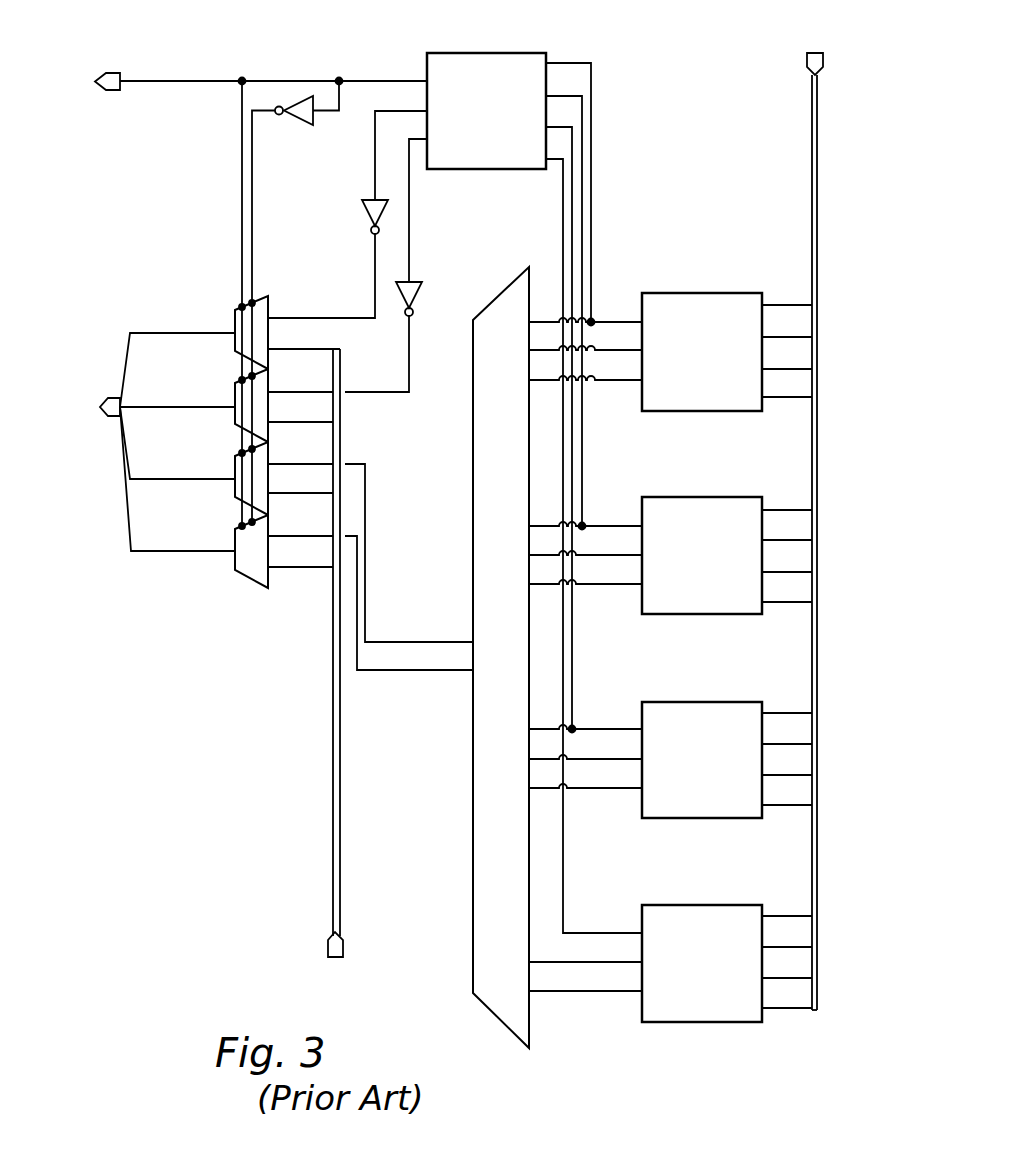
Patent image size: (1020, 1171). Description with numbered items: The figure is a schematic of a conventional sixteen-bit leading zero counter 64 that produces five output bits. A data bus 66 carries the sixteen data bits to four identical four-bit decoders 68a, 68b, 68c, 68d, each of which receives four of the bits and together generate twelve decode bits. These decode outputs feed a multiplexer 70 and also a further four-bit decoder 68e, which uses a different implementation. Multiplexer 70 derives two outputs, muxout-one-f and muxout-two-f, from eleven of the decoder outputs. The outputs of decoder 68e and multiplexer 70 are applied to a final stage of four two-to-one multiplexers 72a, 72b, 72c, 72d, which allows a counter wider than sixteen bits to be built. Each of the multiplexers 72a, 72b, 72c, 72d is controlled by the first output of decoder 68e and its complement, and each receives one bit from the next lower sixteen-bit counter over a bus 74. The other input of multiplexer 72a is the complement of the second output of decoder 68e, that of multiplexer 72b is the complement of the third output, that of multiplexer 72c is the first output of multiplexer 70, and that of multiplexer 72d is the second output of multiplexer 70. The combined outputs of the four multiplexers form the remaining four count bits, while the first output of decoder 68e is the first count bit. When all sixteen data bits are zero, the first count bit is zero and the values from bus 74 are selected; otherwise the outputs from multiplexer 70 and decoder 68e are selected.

The 16-bit counter 64 is at (234, 889).
The data bus 66 is at (812, 197).
The 4-bit decoder 68a is at (710, 293).
The 4-bit decoder 68b is at (710, 497).
The 4-bit decoder 68c is at (710, 702).
The 4-bit decoder 68d is at (710, 905).
The 4-bit decoder 68e is at (494, 53).
The multiplexer 70 is at (490, 304).
The 2:1 multiplexer 72a is at (235, 315).
The 2:1 multiplexer 72b is at (235, 388).
The 2:1 multiplexer 72c is at (235, 461).
The 2:1 multiplexer 72d is at (235, 534).
The bus 74 is at (333, 836).